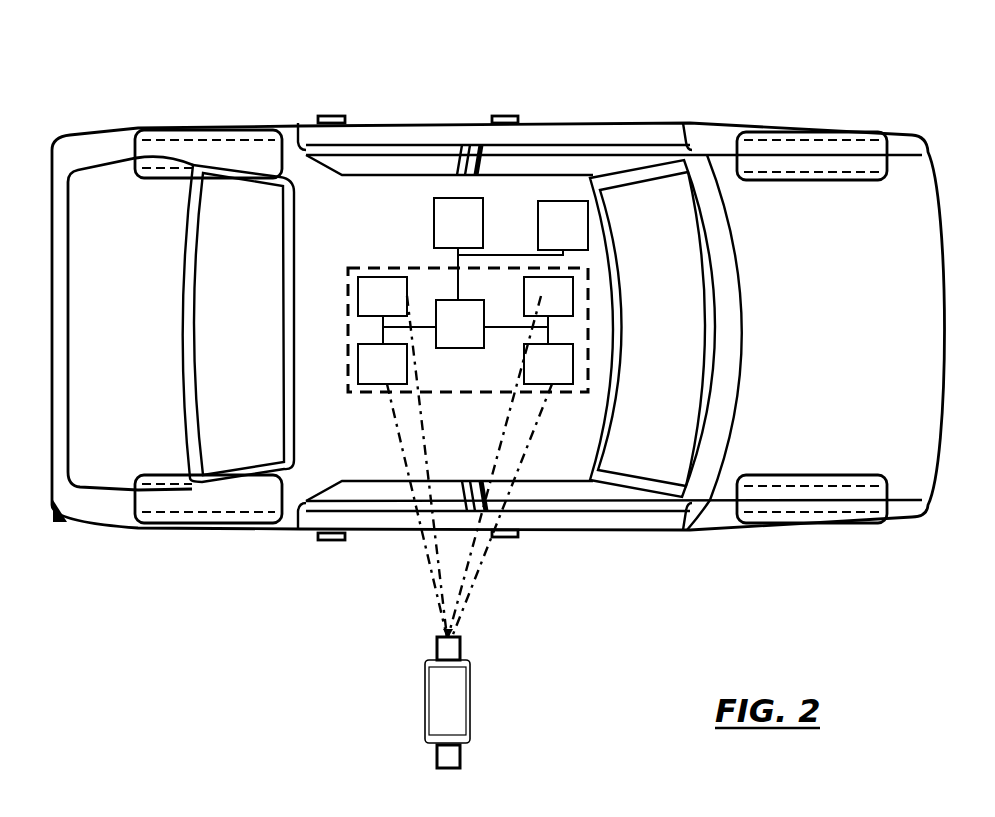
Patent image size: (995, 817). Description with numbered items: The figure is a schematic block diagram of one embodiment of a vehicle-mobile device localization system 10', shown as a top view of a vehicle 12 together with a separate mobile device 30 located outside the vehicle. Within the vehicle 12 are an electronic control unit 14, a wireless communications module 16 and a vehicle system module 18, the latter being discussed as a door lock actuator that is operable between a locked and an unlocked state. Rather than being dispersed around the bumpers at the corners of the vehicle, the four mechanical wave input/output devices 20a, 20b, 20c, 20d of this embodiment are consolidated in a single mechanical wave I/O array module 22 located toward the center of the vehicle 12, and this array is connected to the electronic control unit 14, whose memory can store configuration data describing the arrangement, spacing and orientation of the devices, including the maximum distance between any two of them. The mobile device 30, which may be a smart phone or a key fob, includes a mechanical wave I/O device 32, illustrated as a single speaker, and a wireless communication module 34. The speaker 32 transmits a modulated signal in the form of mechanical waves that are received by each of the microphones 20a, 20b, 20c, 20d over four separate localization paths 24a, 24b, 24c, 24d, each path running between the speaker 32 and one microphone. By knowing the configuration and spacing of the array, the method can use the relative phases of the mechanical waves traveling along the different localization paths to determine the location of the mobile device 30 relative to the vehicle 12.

The vehicle-mobile device localization system 10' is at (500, 281).
The vehicle 12 is at (667, 125).
The electronic control unit 14 is at (473, 298).
The wireless communications module 16 is at (458, 223).
The vehicle system module 18 is at (563, 225).
The mechanical wave input/output device 20a is at (382, 296).
The mechanical wave input/output device 20b is at (382, 364).
The mechanical wave input/output device 20c is at (548, 296).
The mechanical wave input/output device 20d is at (548, 364).
The mechanical wave I/O array module 22 is at (403, 268).
The localization path 24a is at (420, 413).
The localization path 24b is at (402, 458).
The localization path 24c is at (498, 458).
The localization path 24d is at (520, 452).
The mobile device 30 is at (470, 698).
The mechanical wave I/O device 32 is at (460, 648).
The wireless communication module 34 is at (460, 753).